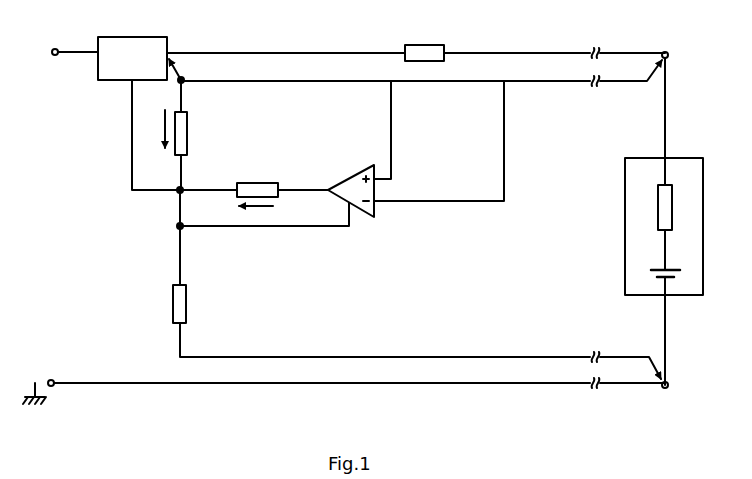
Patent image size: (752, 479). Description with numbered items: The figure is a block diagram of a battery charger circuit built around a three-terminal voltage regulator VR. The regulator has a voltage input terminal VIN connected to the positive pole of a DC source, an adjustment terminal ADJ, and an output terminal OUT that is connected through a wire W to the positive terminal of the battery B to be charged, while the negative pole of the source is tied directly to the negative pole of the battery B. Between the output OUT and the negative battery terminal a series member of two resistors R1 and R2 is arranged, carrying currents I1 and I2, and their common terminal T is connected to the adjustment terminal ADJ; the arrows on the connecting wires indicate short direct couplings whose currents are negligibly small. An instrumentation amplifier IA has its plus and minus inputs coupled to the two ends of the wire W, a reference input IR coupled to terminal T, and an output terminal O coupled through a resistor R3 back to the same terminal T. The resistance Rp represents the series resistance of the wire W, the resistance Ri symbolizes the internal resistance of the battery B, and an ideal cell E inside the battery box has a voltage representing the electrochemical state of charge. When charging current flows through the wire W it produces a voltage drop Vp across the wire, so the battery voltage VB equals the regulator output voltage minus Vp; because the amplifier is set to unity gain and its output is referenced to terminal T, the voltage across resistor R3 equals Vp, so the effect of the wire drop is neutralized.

The voltage regulator VR is at (132, 47).
The voltage input terminal VIN is at (97, 57).
The output terminal OUT is at (168, 54).
The adjustment terminal ADJ is at (132, 82).
The wire W is at (322, 52).
The series resistance of the wire Rp is at (428, 52).
The resistor R1 is at (187, 128).
The current I1 is at (155, 129).
The common terminal T is at (170, 199).
The resistor R3 is at (258, 190).
The current I2 is at (256, 216).
The reference input IR is at (341, 205).
The instrumentation amplifier IA is at (351, 182).
The output terminal O is at (321, 181).
The voltage drop Vp is at (439, 141).
The resistor R2 is at (187, 296).
The battery voltage VB is at (667, 160).
The battery B is at (626, 178).
The internal resistance Ri is at (669, 210).
The ideal cell E is at (655, 325).